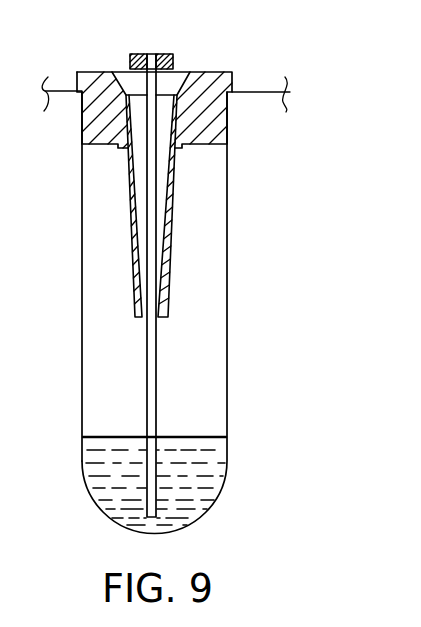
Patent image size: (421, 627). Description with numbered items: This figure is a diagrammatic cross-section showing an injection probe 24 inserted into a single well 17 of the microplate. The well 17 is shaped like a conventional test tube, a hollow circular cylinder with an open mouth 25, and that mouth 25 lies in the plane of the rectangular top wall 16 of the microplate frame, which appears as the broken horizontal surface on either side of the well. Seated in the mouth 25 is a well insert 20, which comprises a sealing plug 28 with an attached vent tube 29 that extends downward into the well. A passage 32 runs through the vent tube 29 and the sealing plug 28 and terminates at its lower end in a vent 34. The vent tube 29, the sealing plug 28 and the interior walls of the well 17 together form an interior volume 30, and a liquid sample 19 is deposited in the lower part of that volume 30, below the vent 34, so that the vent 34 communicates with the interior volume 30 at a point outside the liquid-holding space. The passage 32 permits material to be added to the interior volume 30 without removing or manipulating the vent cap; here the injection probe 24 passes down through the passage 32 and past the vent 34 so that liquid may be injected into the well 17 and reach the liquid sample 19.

The top wall 16 is at (263, 92).
The well 17 is at (227, 267).
The liquid sample 19 is at (215, 455).
The well insert 20 is at (93, 72).
The injection probe 24 is at (157, 362).
The open mouth 25 is at (78, 74).
The sealing plug 28 is at (88, 115).
The vent tube 29 is at (178, 203).
The interior volume 30 is at (83, 232).
The passage 32 is at (168, 110).
The vent 34 is at (142, 318).